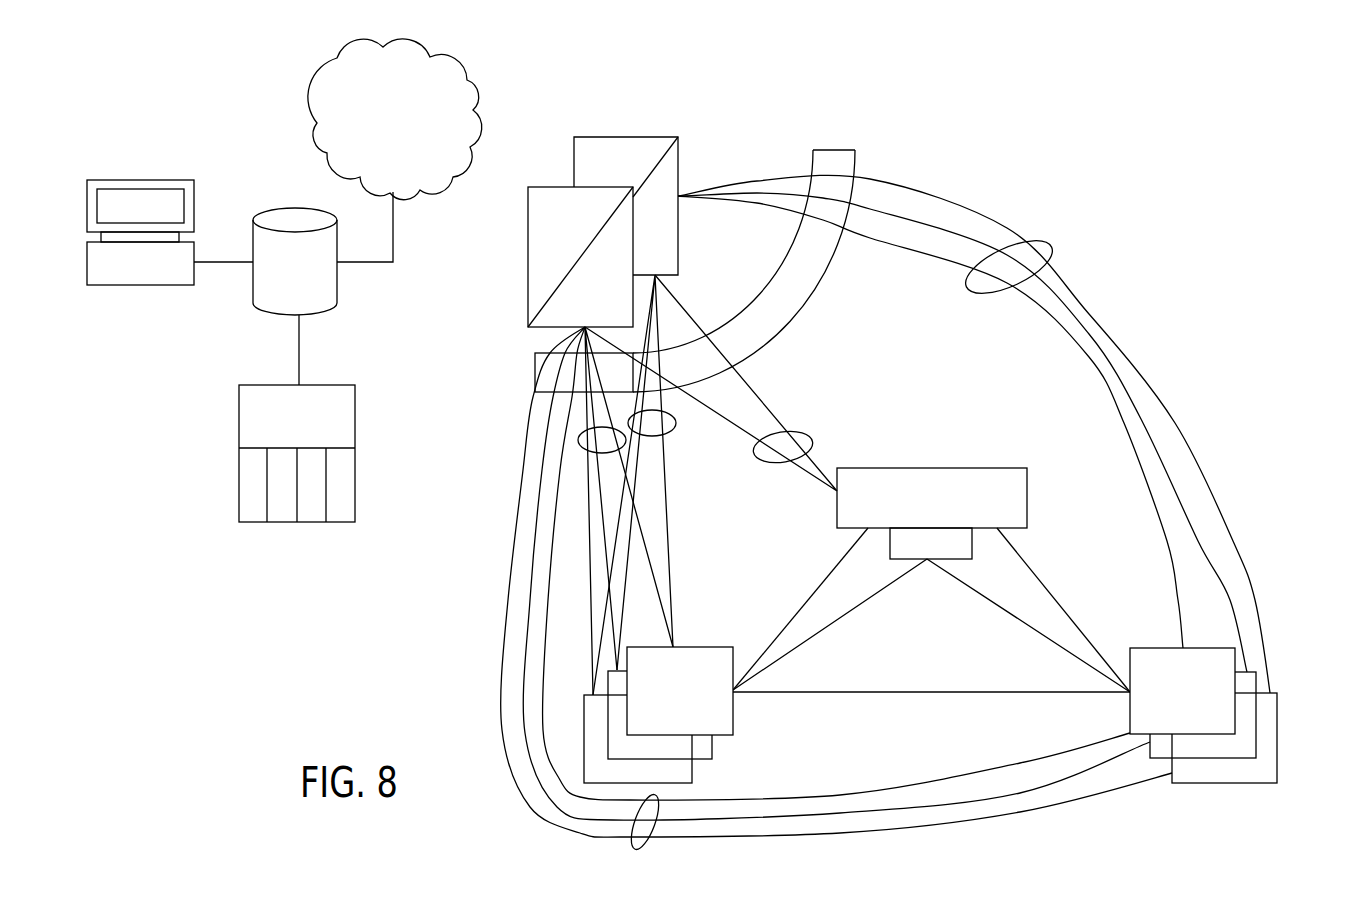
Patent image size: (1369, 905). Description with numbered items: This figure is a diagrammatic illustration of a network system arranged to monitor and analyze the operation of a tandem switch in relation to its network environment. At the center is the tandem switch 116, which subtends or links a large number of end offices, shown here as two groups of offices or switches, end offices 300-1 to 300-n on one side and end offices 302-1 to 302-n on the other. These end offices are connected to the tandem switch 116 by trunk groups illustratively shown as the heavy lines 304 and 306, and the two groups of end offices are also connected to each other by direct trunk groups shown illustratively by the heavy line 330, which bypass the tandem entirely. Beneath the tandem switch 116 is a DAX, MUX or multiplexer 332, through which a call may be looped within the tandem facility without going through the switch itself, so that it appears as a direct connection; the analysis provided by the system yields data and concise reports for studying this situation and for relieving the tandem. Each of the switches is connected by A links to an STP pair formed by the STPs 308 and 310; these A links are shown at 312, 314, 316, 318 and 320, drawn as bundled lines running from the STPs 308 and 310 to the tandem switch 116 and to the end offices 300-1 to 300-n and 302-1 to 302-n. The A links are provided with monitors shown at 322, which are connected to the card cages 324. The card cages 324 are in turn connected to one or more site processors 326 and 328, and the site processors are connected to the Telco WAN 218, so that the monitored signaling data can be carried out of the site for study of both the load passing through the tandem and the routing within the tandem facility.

The Telco WAN 218 is at (448, 70).
The site processor 328 is at (143, 182).
The site processor 326 is at (283, 215).
The card cages 324 is at (248, 413).
The STP 308 is at (547, 185).
The STP 310 is at (632, 137).
The monitors 322 is at (830, 150).
The A link 314 is at (1048, 242).
The A link 312 is at (635, 848).
The A link 316 is at (577, 443).
The A link 318 is at (675, 427).
The A link 320 is at (808, 437).
The tandem switch 116 is at (943, 470).
The multiplexer 332 is at (927, 562).
The trunk group 304 is at (822, 582).
The trunk group 306 is at (1042, 582).
The direct trunk group 330 is at (915, 688).
The end office 300-1 is at (733, 710).
The end office 300-n is at (692, 770).
The end office 302-1 is at (1130, 705).
The end office 302-n is at (1277, 775).